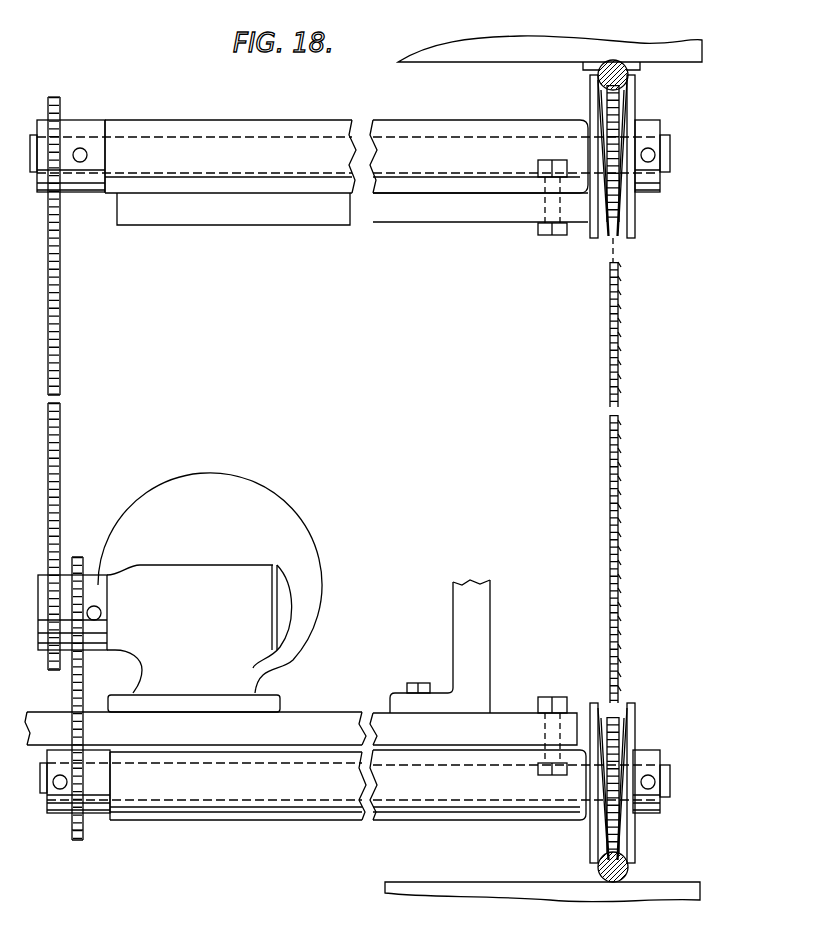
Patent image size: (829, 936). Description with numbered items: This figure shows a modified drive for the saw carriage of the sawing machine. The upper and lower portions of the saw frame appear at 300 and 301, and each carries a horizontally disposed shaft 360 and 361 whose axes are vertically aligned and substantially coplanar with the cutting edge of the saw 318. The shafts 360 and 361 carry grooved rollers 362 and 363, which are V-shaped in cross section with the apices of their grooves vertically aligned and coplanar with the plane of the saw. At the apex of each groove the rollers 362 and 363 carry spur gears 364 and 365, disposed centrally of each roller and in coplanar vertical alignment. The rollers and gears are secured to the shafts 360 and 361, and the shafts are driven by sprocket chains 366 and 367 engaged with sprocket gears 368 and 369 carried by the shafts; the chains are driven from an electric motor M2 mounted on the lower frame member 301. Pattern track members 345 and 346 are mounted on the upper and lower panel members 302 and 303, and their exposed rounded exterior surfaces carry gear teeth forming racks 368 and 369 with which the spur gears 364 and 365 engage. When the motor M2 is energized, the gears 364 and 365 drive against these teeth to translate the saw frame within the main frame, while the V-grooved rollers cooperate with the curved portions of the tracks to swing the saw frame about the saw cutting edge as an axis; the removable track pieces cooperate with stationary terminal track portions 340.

The upper portion of the saw frame 300 is at (203, 230).
The lower portion of the saw frame 301 is at (148, 830).
The upper panel member 302 is at (473, 50).
The lower panel member 303 is at (457, 725).
The saw 318 is at (615, 432).
The stationary pattern terminal track portion 340 is at (460, 909).
The upper pattern track member 345 is at (615, 62).
The lower pattern track member 346 is at (618, 878).
The shaft 360 is at (247, 135).
The shaft 361 is at (272, 770).
The grooved roller 362 is at (628, 108).
The grooved roller 363 is at (632, 733).
The spur gear 364 is at (620, 203).
The spur gear 365 is at (615, 835).
The sprocket chain 366 is at (62, 288).
The sprocket chain 367 is at (76, 692).
The sprocket gear 368 is at (62, 118).
The sprocket gear 369 is at (75, 835).
The electric motor M2 is at (302, 552).